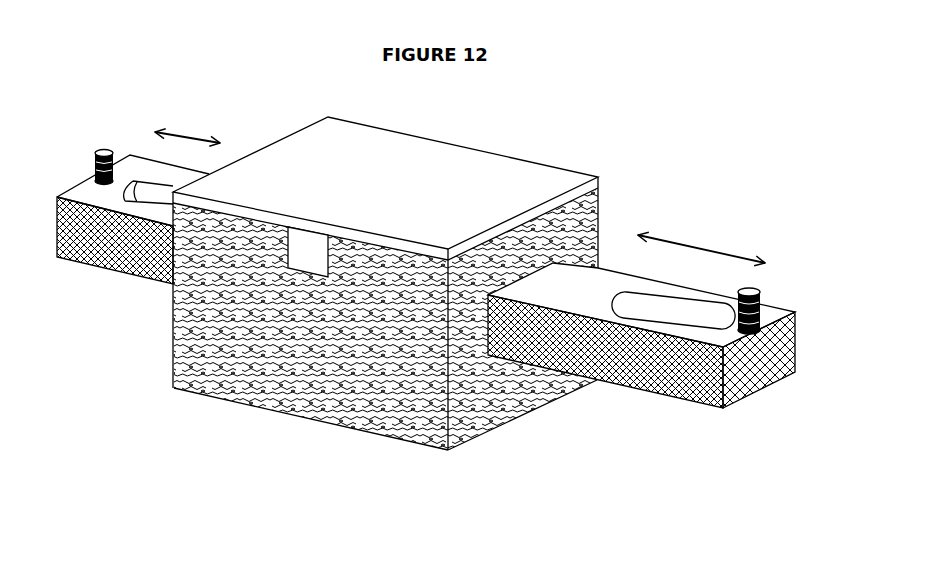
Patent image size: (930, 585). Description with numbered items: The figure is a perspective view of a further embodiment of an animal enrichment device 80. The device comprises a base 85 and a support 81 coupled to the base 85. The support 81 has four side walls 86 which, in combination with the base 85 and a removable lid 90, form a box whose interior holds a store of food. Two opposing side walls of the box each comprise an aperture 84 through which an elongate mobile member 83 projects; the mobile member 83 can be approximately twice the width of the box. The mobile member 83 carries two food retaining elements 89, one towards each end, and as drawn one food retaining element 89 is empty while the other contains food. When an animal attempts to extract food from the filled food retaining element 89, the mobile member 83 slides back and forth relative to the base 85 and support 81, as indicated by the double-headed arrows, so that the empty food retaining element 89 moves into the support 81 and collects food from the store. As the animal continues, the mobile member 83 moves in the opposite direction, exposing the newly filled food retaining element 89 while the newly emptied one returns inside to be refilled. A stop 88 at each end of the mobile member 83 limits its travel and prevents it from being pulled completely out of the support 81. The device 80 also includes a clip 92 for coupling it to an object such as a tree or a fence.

The animal enrichment device 80 is at (657, 101).
The support 81 is at (432, 422).
The mobile member 83 is at (744, 403).
The aperture 84 is at (590, 279).
The base 85 is at (297, 416).
The side walls 86 is at (526, 418).
The stop 88 is at (108, 150).
The food retaining element 89 is at (160, 184).
The removable lid 90 is at (518, 176).
The clip 92 is at (304, 243).